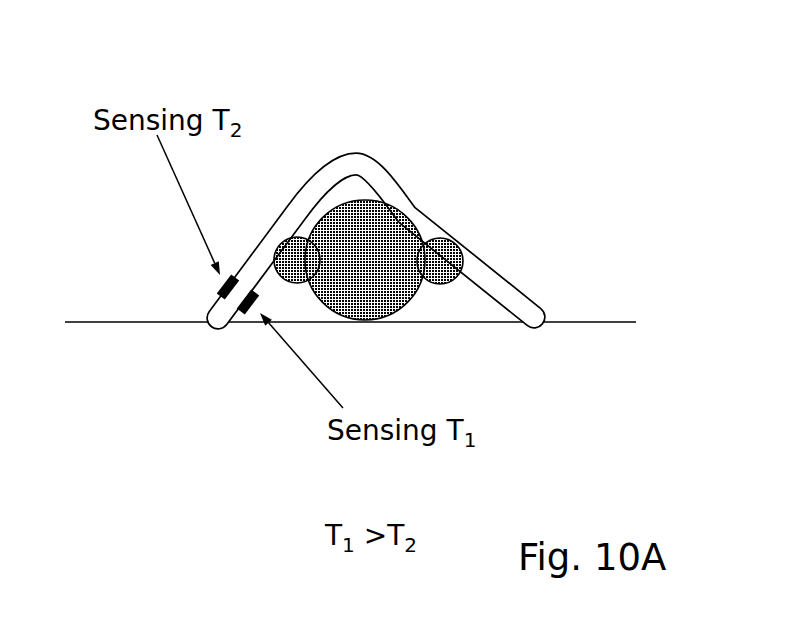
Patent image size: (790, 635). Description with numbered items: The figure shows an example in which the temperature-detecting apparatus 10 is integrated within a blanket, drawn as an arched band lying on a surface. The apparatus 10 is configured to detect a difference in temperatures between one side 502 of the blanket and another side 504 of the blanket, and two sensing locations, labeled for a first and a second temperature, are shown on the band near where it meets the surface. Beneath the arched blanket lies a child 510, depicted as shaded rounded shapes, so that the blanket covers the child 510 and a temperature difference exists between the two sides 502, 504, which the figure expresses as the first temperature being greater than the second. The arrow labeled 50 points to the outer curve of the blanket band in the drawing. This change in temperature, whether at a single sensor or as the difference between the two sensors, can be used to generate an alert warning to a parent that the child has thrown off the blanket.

The temperature-detecting apparatus 10 is at (150, 293).
The wearable device 50 is at (408, 206).
The one side of the blanket 502 is at (305, 180).
The another side of the blanket 504 is at (488, 289).
The child 510 is at (441, 310).